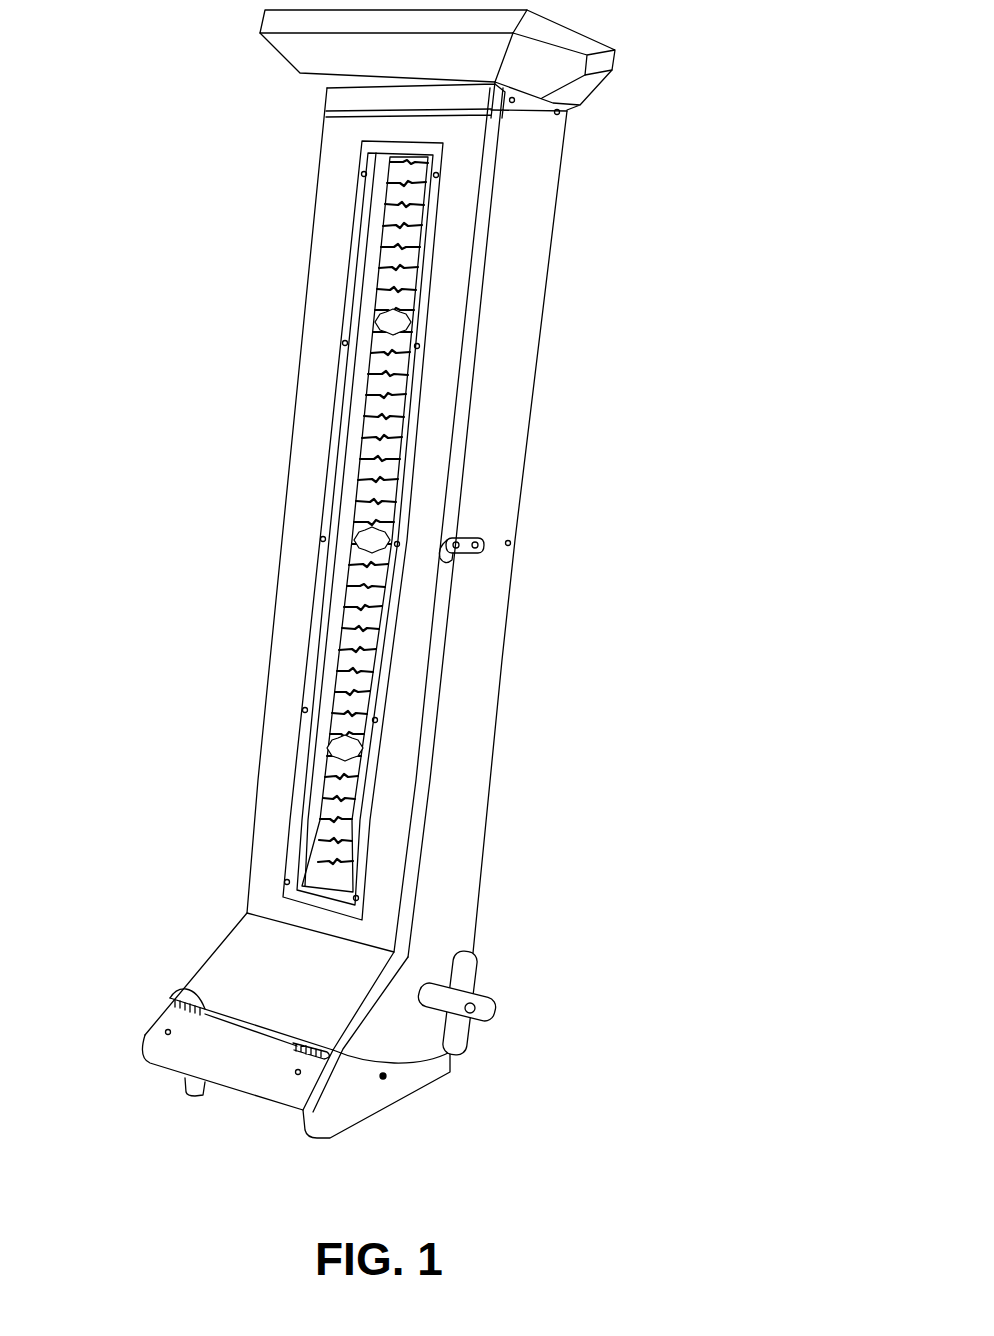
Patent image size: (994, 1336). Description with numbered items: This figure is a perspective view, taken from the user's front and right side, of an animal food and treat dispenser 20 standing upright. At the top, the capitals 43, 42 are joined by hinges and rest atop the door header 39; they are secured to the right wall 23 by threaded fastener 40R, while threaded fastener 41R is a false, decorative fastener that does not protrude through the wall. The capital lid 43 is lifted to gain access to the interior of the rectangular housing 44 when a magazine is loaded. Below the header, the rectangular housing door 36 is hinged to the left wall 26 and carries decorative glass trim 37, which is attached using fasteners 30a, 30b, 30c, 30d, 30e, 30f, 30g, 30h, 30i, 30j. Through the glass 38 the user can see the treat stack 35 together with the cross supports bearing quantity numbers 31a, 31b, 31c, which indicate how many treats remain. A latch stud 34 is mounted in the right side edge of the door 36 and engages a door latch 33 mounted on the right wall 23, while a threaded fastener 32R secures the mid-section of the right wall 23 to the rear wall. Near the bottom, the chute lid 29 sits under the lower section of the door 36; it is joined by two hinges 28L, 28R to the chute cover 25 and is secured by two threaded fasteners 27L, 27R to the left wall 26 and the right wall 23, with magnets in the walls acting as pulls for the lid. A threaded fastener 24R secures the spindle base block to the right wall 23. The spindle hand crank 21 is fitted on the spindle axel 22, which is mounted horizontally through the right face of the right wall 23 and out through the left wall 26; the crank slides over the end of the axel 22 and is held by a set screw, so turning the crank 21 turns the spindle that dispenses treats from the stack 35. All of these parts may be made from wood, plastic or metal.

The animal food and treat dispenser 20 is at (492, 786).
The spindle hand crank 21 is at (477, 958).
The spindle axel 22 is at (478, 1011).
The right wall 23 is at (430, 1087).
The threaded fastener 24R is at (383, 1079).
The chute cover 25 is at (170, 1017).
The left wall 26 is at (185, 1082).
The threaded fastener 27L is at (166, 1034).
The threaded fastener 27R is at (296, 1075).
The hinge 28L is at (178, 994).
The hinge 28R is at (455, 1056).
The chute lid 29 is at (217, 948).
The fastener 30a is at (284, 881).
The fastener 30b is at (360, 899).
The fastener 30c is at (302, 712).
The fastener 30d is at (378, 721).
The fastener 30e is at (320, 541).
The fastener 30f is at (399, 547).
The fastener 30g is at (342, 346).
The fastener 30h is at (420, 349).
The fastener 30i is at (362, 178).
The fastener 30j is at (439, 178).
The cross support with quantity designation number 31a is at (364, 745).
The cross support with quantity designation number 31b is at (372, 529).
The cross support with quantity designation number 31c is at (412, 313).
The threaded fastener 32R is at (512, 545).
The door latch 33 is at (478, 535).
The latch stud 34 is at (448, 540).
The treat stack 35 is at (393, 415).
The rectangular housing door 36 is at (303, 311).
The glass trim 37 is at (352, 242).
The glass 38 is at (411, 240).
The door header 39 is at (326, 99).
The threaded fastener 40R is at (559, 114).
The threaded fastener 41R is at (513, 103).
The capital 42 is at (598, 91).
The capital lid 43 is at (286, 58).
The rectangular housing 44 is at (537, 340).